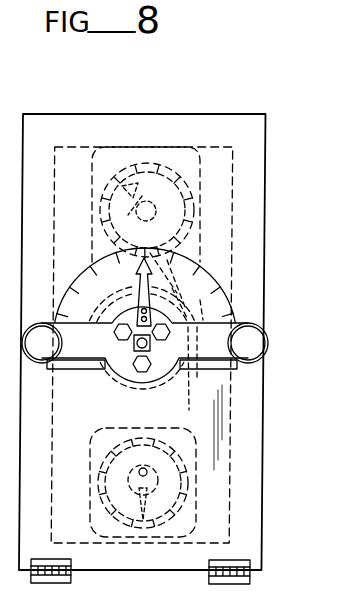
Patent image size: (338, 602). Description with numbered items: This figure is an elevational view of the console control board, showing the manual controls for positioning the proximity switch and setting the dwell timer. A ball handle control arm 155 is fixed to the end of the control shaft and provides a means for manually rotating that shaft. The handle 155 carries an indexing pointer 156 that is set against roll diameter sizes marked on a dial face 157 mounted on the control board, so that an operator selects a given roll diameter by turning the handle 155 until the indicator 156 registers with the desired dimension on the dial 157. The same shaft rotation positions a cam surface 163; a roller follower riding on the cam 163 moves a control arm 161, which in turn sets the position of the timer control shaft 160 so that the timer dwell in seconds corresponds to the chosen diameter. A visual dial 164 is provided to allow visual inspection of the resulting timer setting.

The ball handle control arm 155 is at (210, 366).
The indexing pointer 156 is at (205, 283).
The dial face 157 is at (210, 300).
The control shaft 160 is at (200, 203).
The control arm 161 is at (200, 242).
The cam surface 163 is at (186, 384).
The visual dial 164 is at (150, 160).